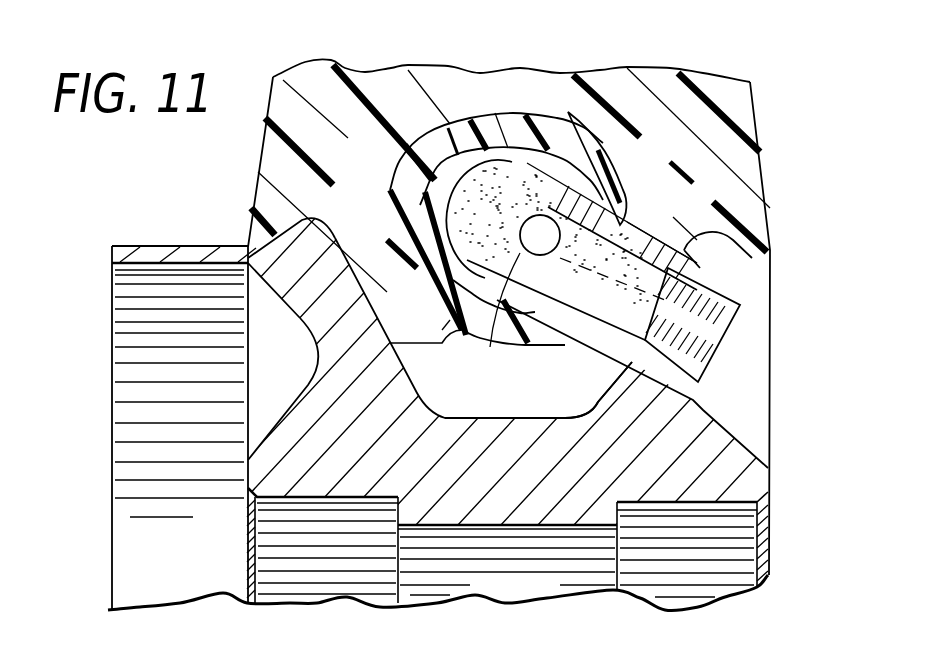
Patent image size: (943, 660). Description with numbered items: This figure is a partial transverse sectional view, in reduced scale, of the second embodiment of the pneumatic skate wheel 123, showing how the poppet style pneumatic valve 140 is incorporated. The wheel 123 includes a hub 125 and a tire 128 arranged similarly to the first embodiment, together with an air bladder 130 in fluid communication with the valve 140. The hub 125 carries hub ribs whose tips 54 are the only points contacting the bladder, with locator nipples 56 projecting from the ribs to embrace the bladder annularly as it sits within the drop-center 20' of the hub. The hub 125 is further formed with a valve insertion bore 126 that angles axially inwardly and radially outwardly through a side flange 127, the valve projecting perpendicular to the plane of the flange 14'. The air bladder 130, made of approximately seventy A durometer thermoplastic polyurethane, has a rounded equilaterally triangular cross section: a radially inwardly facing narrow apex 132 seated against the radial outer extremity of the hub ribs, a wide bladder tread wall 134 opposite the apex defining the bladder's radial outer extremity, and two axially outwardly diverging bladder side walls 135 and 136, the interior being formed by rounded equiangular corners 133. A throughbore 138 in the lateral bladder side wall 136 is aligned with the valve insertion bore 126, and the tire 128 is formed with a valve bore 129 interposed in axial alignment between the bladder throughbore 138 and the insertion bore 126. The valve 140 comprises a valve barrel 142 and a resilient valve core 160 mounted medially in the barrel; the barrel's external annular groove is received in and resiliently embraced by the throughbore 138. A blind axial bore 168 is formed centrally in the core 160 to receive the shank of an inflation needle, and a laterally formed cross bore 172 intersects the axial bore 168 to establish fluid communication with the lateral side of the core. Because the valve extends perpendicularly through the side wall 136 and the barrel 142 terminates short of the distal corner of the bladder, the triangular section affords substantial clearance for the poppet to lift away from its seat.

The pneumatic skate wheel 123 is at (102, 395).
The hub 125 is at (290, 323).
The valve insertion bore 126 is at (748, 297).
The side flange 127 is at (767, 438).
The tire 128 is at (259, 157).
The valve bore 129 is at (630, 220).
The air bladder 130 is at (602, 130).
The narrow apex 132 is at (510, 347).
The rounded equiangular corners 133 is at (441, 182).
The bladder tread wall 134 is at (487, 117).
The bladder side wall 135 is at (395, 228).
The lateral bladder side wall 136 is at (620, 168).
The throughbore 138 is at (563, 307).
The poppet style pneumatic valve 140 is at (742, 323).
The valve barrel 142 is at (633, 228).
The valve core 160 is at (535, 204).
The blind axial bore 168 is at (685, 319).
The cross bore 172 is at (489, 345).
The tips of hub ribs 54 is at (407, 338).
The locator nipples 56 is at (442, 330).
The flange 14' is at (722, 154).
The insert pocket 20' is at (610, 399).